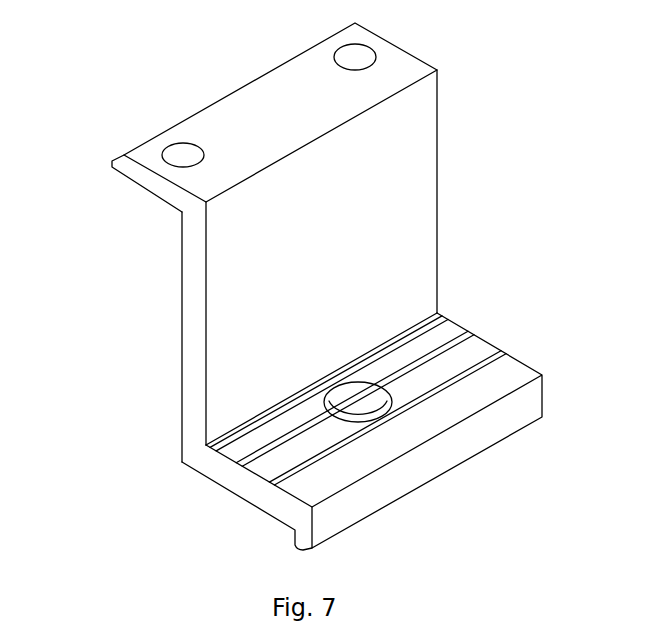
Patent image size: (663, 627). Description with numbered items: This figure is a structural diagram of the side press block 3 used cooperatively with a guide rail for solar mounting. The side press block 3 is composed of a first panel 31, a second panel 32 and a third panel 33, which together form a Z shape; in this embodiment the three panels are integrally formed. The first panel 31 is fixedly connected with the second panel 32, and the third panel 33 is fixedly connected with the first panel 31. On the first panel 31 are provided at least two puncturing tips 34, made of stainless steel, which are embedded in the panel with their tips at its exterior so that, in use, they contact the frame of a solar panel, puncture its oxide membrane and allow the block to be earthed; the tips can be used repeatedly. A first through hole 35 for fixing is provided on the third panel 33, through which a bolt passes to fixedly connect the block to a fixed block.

The side press block 3 is at (138, 393).
The first panel 31 is at (262, 105).
The second panel 32 is at (197, 305).
The third panel 33 is at (240, 455).
The puncturing tip 34 is at (185, 157).
The first through hole 35 is at (368, 398).